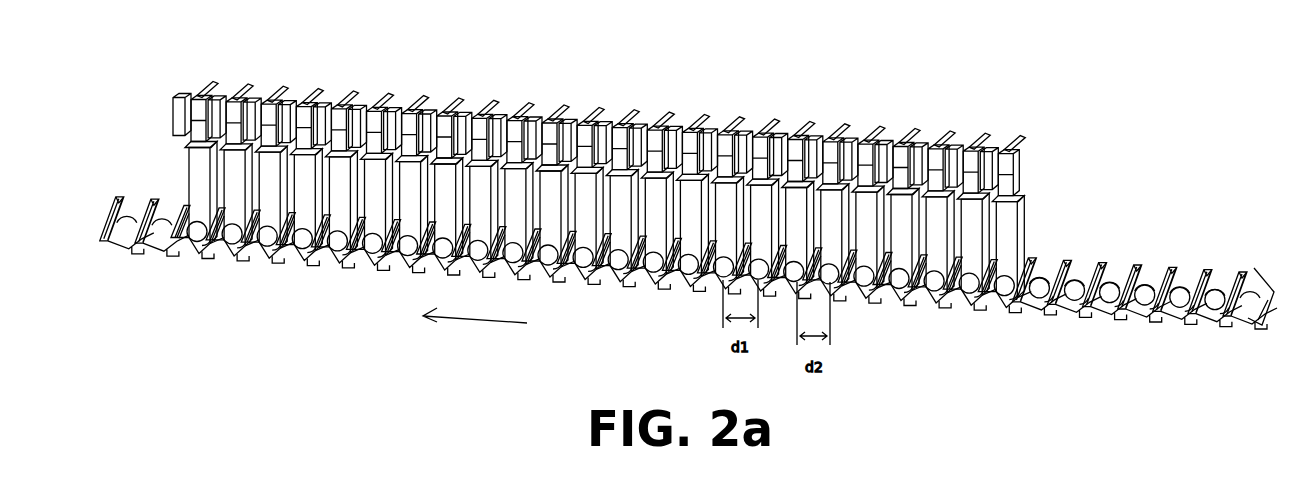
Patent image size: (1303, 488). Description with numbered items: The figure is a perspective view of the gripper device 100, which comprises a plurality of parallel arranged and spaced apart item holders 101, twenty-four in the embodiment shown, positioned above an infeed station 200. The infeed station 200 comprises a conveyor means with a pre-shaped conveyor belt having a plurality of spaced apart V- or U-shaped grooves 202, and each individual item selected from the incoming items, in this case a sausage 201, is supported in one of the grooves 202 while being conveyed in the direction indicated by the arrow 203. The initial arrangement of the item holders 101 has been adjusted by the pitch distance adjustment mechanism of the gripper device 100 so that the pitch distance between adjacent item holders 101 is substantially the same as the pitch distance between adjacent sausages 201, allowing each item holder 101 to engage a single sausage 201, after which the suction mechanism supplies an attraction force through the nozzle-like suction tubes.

The gripper device 100 is at (635, 262).
The item holder 101 is at (1031, 234).
The infeed station 200 is at (688, 264).
The sausage 201 is at (901, 285).
The conveyor belt groove 202 is at (153, 250).
The arrow 203 is at (456, 323).